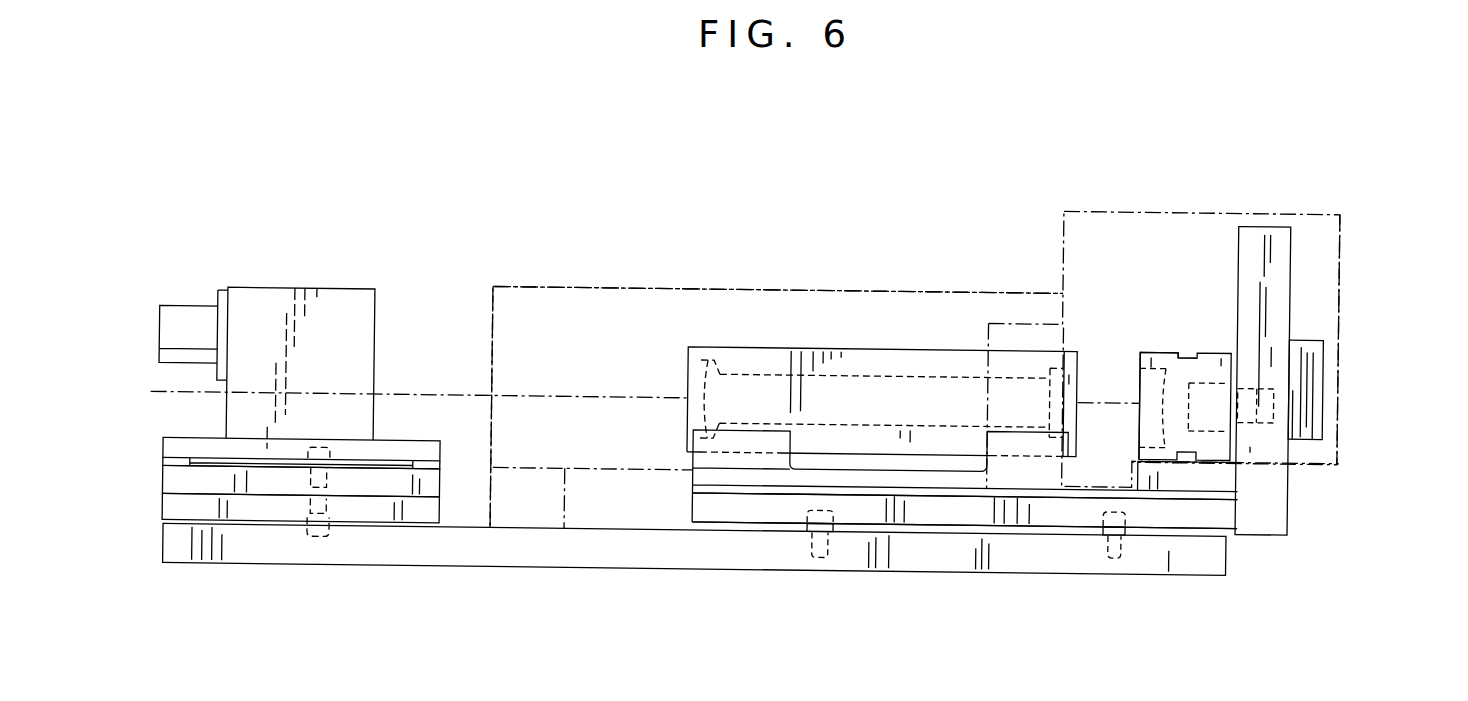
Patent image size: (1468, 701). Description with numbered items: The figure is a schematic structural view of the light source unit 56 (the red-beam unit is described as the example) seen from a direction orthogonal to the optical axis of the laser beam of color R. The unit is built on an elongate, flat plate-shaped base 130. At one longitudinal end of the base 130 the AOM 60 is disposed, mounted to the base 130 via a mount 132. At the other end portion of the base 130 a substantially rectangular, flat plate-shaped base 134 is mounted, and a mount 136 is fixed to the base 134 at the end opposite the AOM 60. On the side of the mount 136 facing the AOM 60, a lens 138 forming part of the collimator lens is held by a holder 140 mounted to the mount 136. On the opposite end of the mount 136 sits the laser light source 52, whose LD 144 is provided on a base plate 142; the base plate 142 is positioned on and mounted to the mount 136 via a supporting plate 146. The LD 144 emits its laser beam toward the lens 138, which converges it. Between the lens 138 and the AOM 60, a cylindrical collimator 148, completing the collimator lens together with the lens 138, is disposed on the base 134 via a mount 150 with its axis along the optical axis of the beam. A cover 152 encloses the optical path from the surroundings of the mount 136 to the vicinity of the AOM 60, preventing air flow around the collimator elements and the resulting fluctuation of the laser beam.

The base 130 is at (656, 553).
The mount 132 is at (260, 485).
The base 134 is at (1051, 508).
The mount 136 is at (1218, 476).
The lens 138 is at (1174, 379).
The holder 140 is at (1157, 359).
The base plate 142 is at (1305, 204).
The LD 144 is at (1305, 423).
The supporting plate 146 is at (1273, 508).
The collimator 148 is at (918, 343).
The mount 150 is at (918, 477).
The cover 152 is at (715, 290).
The light source unit 56 is at (877, 171).
The laser light source 52 is at (1318, 304).
The AOM 60 is at (331, 306).
The R laser beam R is at (455, 395).